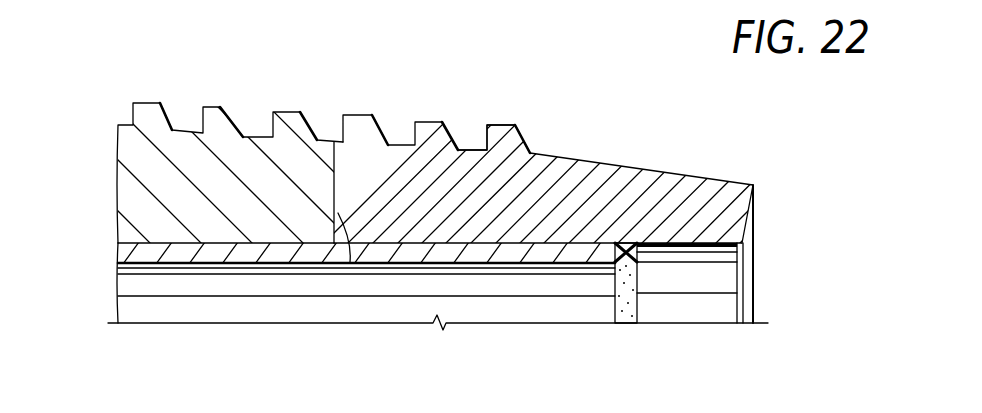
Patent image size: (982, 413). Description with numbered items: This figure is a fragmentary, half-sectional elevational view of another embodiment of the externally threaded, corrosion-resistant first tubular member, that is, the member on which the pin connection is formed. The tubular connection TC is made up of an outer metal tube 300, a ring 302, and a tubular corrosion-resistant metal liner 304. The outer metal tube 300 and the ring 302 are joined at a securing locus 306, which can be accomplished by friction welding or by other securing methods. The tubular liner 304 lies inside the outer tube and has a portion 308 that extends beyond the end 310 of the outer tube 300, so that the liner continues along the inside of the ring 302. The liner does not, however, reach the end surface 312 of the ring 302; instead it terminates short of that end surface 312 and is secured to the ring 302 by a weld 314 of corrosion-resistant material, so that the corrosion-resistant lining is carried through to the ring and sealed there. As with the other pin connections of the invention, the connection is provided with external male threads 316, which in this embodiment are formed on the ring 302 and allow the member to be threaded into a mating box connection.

The outer metal tube 300 is at (133, 165).
The ring 302 is at (571, 180).
The tubular corrosion-resistant metal liner 304 is at (240, 255).
The securing locus 306 is at (333, 170).
The portion of tubular liner 308 is at (485, 253).
The end of outer tube 310 is at (350, 262).
The end surface of ring 312 is at (748, 222).
The weld 314 is at (633, 252).
The external male threads 316 is at (483, 140).
The tubular connection TC is at (243, 83).